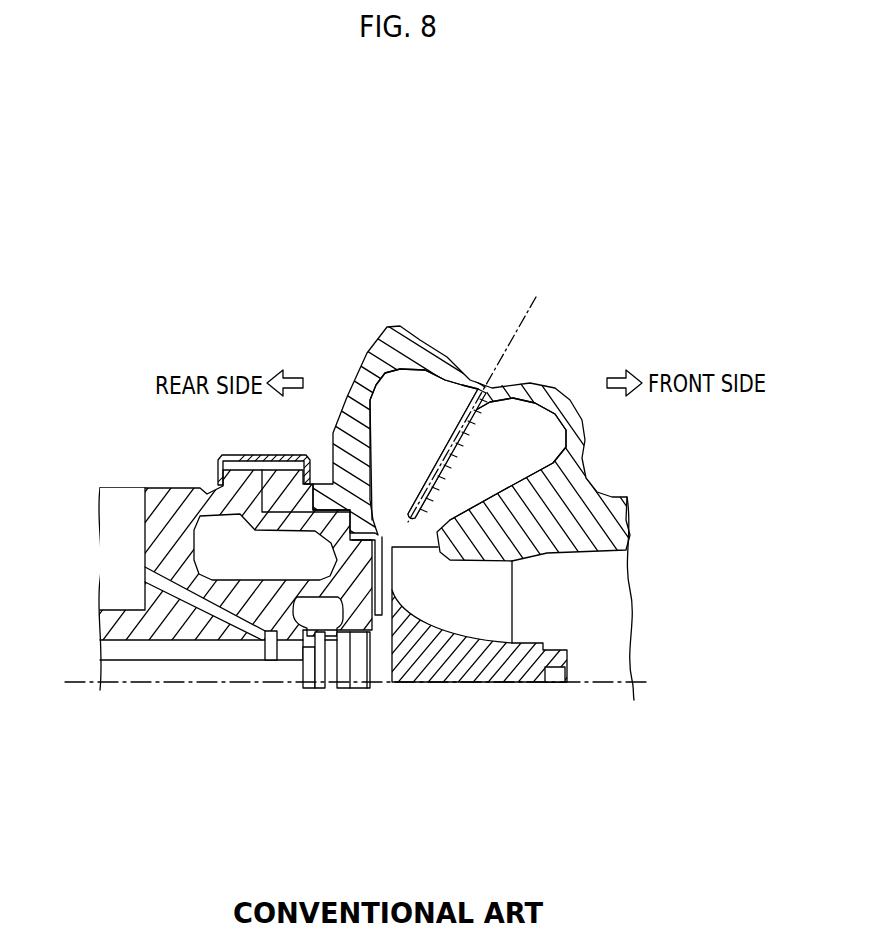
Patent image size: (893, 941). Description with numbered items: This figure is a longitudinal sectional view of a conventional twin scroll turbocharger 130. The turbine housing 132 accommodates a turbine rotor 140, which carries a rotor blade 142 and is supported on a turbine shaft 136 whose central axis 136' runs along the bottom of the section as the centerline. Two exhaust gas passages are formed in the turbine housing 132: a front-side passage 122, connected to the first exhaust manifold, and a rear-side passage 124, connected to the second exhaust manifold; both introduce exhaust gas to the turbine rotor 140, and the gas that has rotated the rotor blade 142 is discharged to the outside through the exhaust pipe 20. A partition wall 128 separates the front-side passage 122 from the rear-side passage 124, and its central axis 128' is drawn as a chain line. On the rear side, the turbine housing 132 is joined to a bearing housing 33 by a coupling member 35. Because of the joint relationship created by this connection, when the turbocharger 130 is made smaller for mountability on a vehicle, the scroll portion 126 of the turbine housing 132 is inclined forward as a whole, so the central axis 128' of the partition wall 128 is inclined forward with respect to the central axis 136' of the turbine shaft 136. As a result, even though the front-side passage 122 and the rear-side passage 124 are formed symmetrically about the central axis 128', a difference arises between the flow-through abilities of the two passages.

The twin scroll turbocharger 130 is at (157, 313).
The exhaust pipe 20 is at (642, 645).
The bearing housing 33 is at (172, 487).
The coupling member 35 is at (233, 453).
The turbine housing 132 is at (568, 388).
The rear-side passage 124 is at (425, 424).
The front-side passage 122 is at (518, 464).
The scroll portion 126 is at (445, 412).
The partition wall 128 is at (447, 454).
The central axis of partition wall 128' is at (472, 395).
The turbine rotor 140 is at (453, 668).
The rotor blade 142 is at (493, 592).
The turbine shaft 136 is at (336, 679).
The central axis of turbine shaft 136' is at (356, 714).